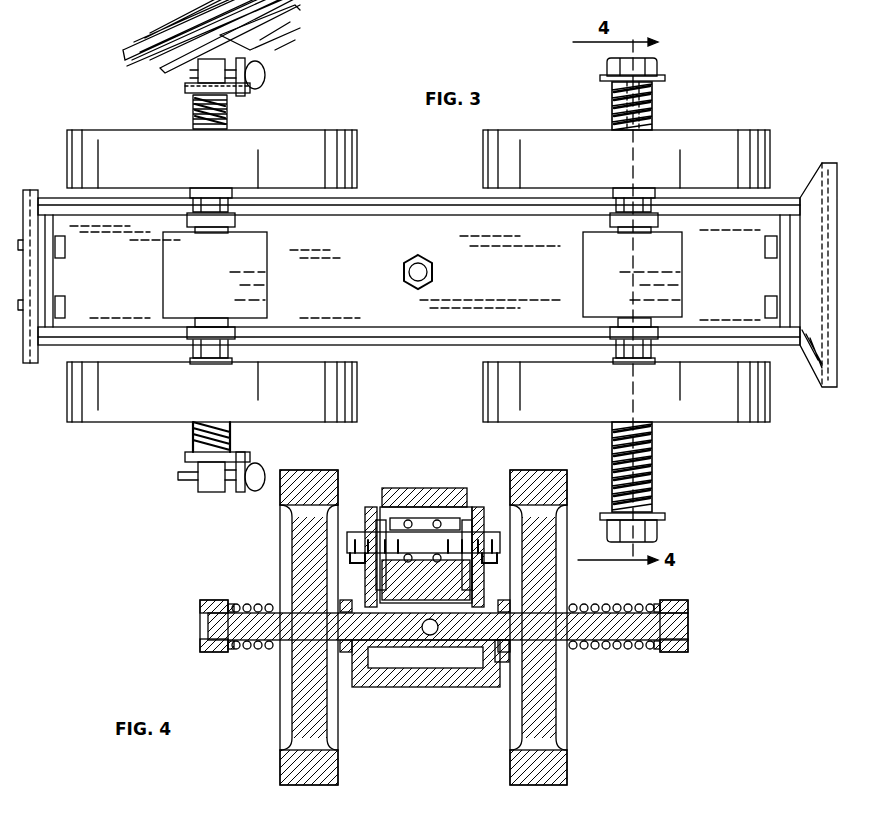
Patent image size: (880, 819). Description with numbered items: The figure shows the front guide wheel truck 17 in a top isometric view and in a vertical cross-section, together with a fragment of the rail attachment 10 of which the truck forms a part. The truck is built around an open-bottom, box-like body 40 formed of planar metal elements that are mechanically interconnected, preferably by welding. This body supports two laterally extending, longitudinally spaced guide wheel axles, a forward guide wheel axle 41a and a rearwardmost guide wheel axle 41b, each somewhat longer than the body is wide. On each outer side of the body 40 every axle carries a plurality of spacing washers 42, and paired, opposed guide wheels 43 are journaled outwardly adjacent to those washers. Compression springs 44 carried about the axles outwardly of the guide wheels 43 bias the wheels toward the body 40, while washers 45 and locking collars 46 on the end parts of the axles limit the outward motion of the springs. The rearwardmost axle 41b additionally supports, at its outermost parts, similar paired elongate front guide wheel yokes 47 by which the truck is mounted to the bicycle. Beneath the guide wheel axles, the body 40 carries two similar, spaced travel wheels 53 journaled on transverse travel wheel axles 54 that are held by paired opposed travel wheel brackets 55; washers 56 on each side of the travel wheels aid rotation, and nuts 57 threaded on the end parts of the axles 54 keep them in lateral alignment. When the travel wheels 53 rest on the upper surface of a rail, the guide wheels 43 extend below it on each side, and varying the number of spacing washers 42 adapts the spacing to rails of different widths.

In FIG. 3, the track rail 10 is at (211, 36).
In FIG. 3, the front guide wheel truck 17 is at (458, 196).
In FIG. 4, the front guide wheel truck 17 is at (575, 648).
In FIG. 3, the body 40 is at (442, 335).
In FIG. 4, the body 40 is at (372, 675).
In FIG. 3, the guide wheel axle 41a is at (648, 100).
In FIG. 3, the rearwardmost guide wheel axle 41b is at (207, 85).
In FIG. 4, the rearwardmost guide wheel axle 41b is at (622, 600).
In FIG. 3, the spacing washers 42 is at (226, 188).
In FIG. 4, the spacing washers 42 is at (346, 600).
In FIG. 3, the guide wheels 43 is at (330, 150).
In FIG. 4, the guide wheels 43 is at (338, 478).
In FIG. 3, the compression springs 44 is at (228, 122).
In FIG. 4, the compression springs 44 is at (258, 604).
In FIG. 3, the washers 45 is at (203, 108).
In FIG. 4, the washers 45 is at (230, 602).
In FIG. 3, the locking collars 46 is at (607, 68).
In FIG. 4, the locking collars 46 is at (200, 622).
In FIG. 3, the front guide wheel yokes 47 is at (240, 92).
In FIG. 3, the travel wheels 53 is at (180, 263).
In FIG. 4, the travel wheels 53 is at (430, 495).
In FIG. 4, the travel wheel axles 54 is at (430, 540).
In FIG. 3, the travel wheel brackets 55 is at (187, 222).
In FIG. 4, the travel wheel brackets 55 is at (372, 507).
In FIG. 3, the washers 56 is at (228, 231).
In FIG. 3, the nuts 57 is at (208, 200).
In FIG. 4, the nuts 57 is at (484, 558).